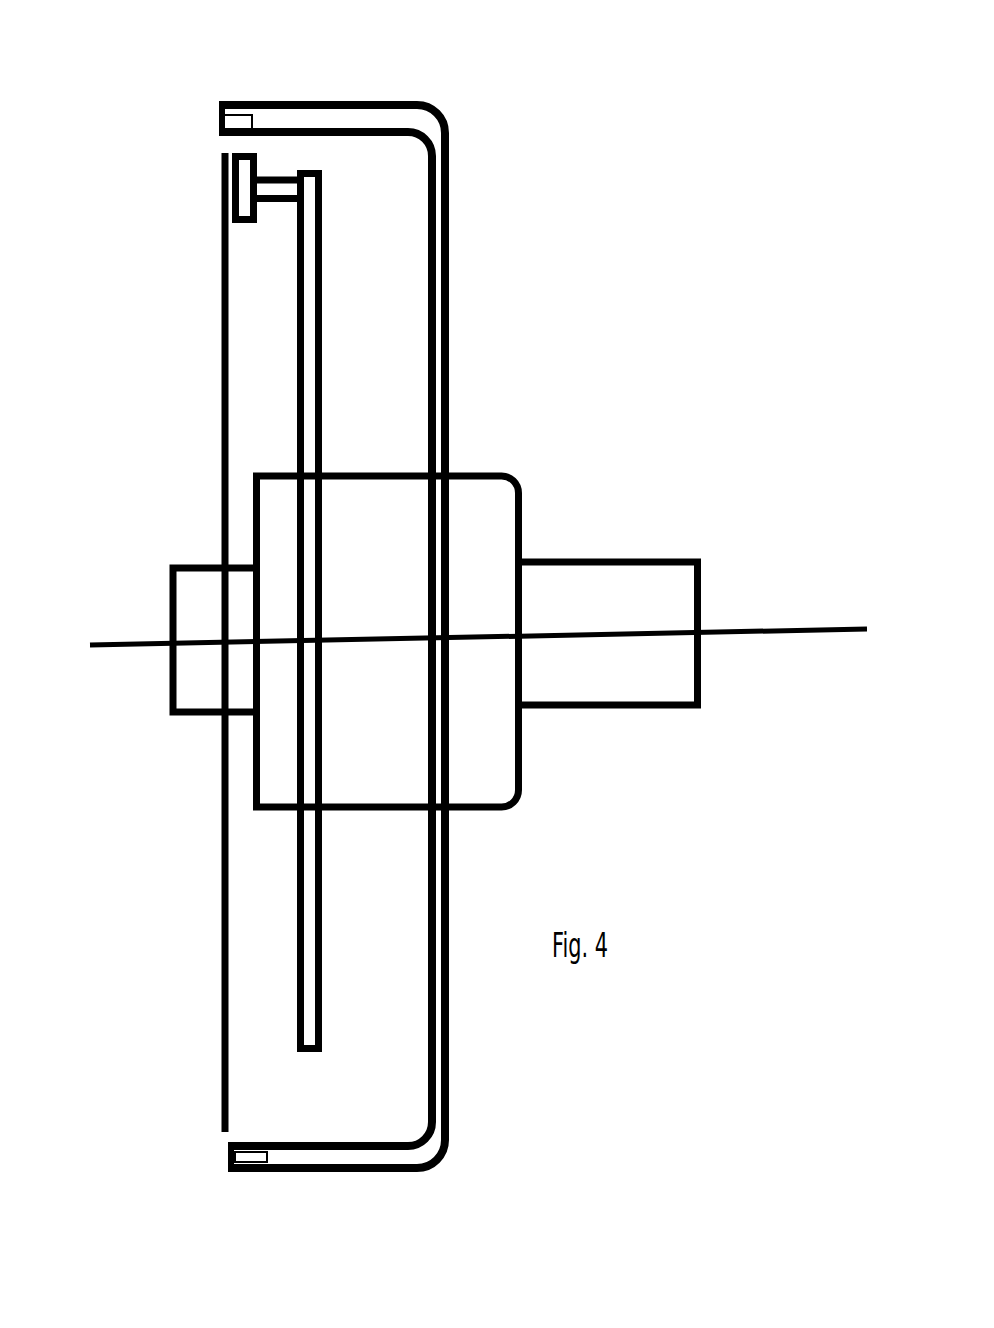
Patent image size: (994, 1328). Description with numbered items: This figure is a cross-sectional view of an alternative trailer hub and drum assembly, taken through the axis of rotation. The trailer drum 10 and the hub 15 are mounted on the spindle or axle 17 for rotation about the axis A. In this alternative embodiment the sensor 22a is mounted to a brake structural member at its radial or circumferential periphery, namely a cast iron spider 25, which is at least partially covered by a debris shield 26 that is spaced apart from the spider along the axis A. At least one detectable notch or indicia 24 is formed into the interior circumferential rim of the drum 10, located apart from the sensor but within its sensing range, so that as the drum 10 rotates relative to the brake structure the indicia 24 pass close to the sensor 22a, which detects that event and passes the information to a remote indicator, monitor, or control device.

The trailer drum 10 is at (450, 302).
The hub 15 is at (478, 540).
The spindle or axle 17 is at (633, 608).
The sensor 22a is at (243, 198).
The detectable notch or indicia 24 is at (260, 103).
The cast iron spider 25 is at (312, 290).
The debris shield 26 is at (220, 328).
The axis A is at (817, 623).